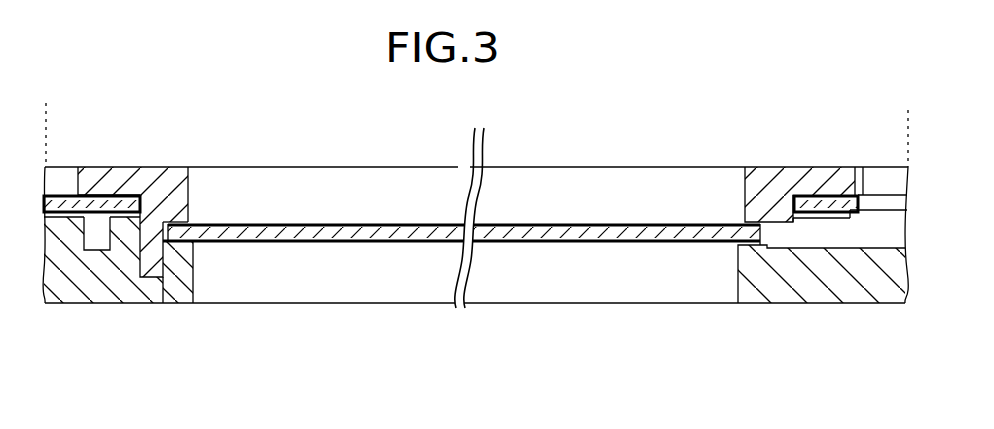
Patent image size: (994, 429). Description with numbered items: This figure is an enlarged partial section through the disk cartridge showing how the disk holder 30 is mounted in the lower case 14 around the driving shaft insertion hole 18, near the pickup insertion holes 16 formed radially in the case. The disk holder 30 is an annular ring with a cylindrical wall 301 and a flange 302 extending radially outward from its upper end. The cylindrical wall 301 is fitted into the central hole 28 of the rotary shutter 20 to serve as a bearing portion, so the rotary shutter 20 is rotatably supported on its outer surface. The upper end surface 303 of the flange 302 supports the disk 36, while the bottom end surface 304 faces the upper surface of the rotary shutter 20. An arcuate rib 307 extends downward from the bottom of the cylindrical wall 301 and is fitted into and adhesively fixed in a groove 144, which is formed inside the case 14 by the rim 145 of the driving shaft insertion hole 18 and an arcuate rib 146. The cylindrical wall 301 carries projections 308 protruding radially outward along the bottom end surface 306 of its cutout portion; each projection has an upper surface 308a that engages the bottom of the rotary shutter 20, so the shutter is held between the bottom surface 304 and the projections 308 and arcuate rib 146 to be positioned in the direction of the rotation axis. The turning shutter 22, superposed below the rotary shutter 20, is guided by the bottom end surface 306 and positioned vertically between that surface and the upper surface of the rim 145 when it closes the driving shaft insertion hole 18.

The lower case 14 is at (755, 303).
The pickup insertion holes 16 is at (47, 290).
The driving shaft insertion hole 18 is at (723, 303).
The rotary shutter 20 is at (58, 200).
The turning shutter 22 is at (626, 224).
The central hole 28 is at (156, 197).
The disk holder 30 is at (752, 167).
The disk 36 is at (550, 149).
The groove 144 is at (146, 262).
The rim 145 is at (747, 245).
The arcuate rib 146 is at (107, 243).
The cylindrical wall 301 is at (188, 190).
The flange 302 is at (133, 167).
The upper end surface 303 is at (805, 167).
The bottom end surface 304 is at (98, 196).
The bottom end surface 306 is at (781, 222).
The arcuate rib 307 is at (175, 255).
The projections 308 is at (818, 218).
The upper surface 308a is at (850, 216).